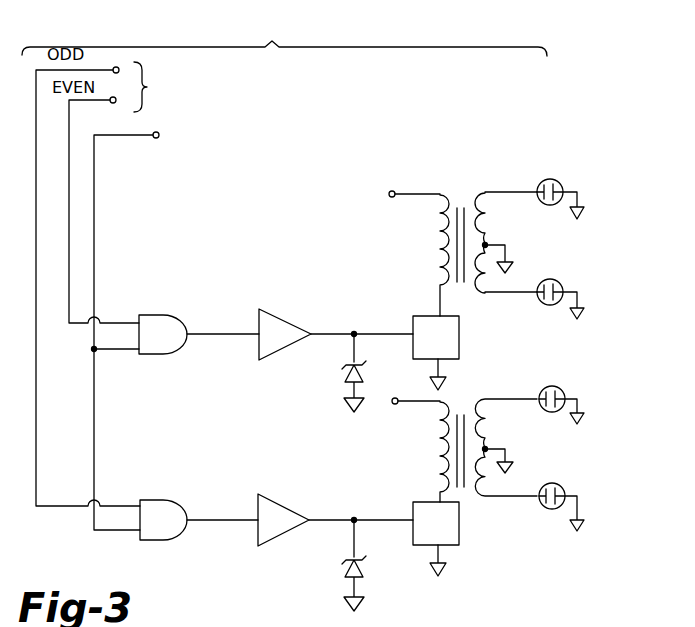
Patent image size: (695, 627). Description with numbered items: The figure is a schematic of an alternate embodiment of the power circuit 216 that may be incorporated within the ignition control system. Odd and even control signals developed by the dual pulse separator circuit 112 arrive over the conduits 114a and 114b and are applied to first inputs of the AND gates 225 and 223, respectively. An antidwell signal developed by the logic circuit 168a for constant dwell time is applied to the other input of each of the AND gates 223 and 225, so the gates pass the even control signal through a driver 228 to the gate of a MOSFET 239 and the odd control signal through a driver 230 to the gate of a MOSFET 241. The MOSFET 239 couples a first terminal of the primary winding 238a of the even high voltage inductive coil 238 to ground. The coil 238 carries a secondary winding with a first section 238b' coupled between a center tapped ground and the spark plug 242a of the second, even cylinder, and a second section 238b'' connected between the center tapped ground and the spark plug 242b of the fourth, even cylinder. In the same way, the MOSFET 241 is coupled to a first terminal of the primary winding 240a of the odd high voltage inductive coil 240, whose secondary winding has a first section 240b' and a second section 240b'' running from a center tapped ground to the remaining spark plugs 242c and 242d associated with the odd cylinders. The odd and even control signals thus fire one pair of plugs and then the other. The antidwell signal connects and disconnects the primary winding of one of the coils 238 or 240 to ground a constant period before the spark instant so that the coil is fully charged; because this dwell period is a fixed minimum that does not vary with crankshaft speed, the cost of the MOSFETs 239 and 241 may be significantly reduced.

The power circuit 216 is at (284, 35).
The conduit 114a is at (118, 66).
The conduit 114b is at (123, 112).
The dual pulse separator circuit 112 is at (244, 87).
The logic circuit for constant dwell time 168a is at (212, 321).
The AND gate 223 is at (188, 303).
The AND gate 225 is at (172, 489).
The driver 228 is at (282, 317).
The driver 230 is at (272, 506).
The even high voltage inductive coil 238 is at (467, 231).
The primary winding 238a is at (428, 243).
The first section of secondary winding 238b' is at (510, 217).
The second section of secondary winding 238b'' is at (523, 268).
The MOSFET 239 is at (460, 333).
The odd high voltage inductive coil 240 is at (471, 428).
The primary winding 240a is at (428, 450).
The first section of secondary winding 240b' is at (510, 423).
The second section of secondary winding 240b'' is at (523, 472).
The MOSFET 241 is at (420, 502).
The spark plug 242a is at (561, 184).
The spark plug 242b is at (564, 284).
The spark plug 242c is at (564, 389).
The spark plug 242d is at (564, 490).